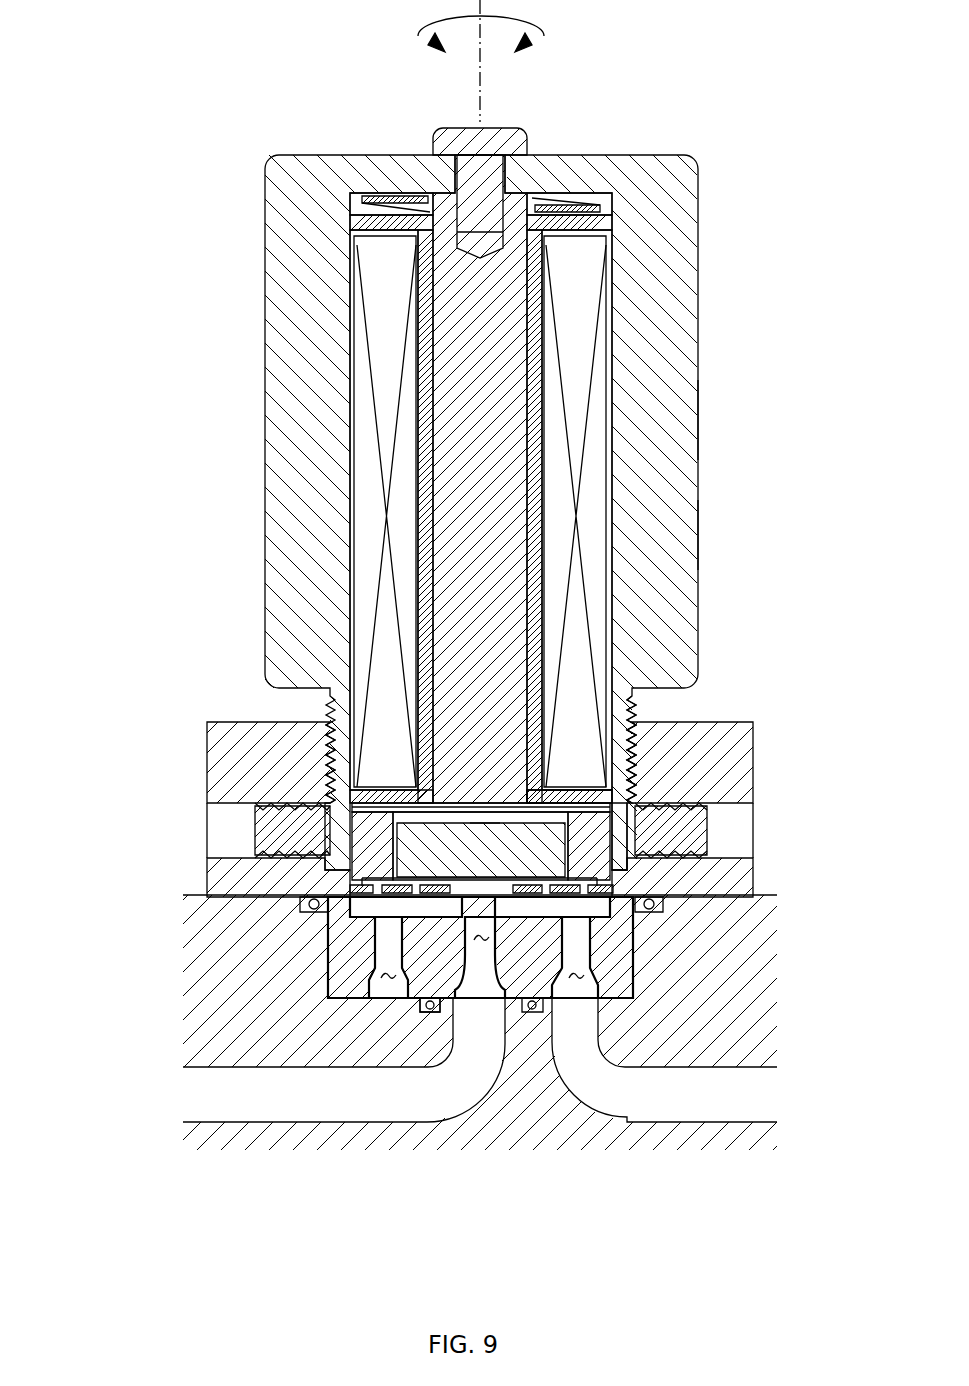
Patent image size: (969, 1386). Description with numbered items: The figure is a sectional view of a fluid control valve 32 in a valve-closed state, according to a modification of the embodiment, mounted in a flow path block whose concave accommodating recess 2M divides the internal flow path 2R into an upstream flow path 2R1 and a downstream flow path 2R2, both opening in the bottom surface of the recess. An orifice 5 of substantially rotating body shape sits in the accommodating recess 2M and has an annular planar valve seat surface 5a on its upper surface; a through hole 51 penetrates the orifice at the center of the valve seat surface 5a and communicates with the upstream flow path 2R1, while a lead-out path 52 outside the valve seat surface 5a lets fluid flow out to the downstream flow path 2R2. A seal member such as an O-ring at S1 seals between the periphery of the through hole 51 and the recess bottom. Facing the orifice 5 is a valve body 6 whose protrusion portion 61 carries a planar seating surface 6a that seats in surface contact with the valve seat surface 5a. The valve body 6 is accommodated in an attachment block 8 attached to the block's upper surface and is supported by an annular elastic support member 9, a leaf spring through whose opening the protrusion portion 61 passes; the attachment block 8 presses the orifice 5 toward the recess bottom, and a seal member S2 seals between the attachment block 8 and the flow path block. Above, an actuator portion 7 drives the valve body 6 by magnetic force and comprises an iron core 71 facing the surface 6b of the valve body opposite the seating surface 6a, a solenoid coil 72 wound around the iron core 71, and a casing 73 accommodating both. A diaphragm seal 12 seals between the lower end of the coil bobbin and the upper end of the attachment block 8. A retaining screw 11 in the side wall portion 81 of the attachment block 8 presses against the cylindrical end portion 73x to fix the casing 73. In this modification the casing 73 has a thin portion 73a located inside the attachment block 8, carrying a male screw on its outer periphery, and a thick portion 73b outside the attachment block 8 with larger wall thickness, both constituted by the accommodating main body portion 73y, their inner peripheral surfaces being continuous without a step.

The fluid control valve 32 is at (283, 118).
The actuator portion 7 is at (125, 300).
The iron core 71 is at (450, 297).
The solenoid coil 72 is at (370, 383).
The casing 73 is at (265, 443).
The accommodating main body portion 73y is at (697, 421).
The thick portion 73b is at (697, 534).
The thin portion 73a is at (635, 718).
The cylindrical end portion 73x is at (640, 880).
The surface of the valve body opposite to the seating surface 6b is at (483, 823).
The attachment block 8 is at (232, 722).
The diaphragm seal 12 is at (395, 810).
The valve body 6 is at (397, 827).
The retaining screw 11 is at (255, 830).
The support member 9 is at (352, 880).
The accommodating recess 2M is at (327, 930).
The protrusion portion 61 is at (440, 912).
The seating surface 6a is at (370, 985).
The lead-out path 52 is at (423, 1008).
The valve seat surface 5a is at (613, 786).
The side wall portion 81 is at (755, 790).
The seal member S2 is at (663, 905).
The orifice 5 is at (633, 955).
The through hole 51 is at (490, 930).
The seal S1 is at (428, 1012).
The upstream flow path 2R1 is at (450, 1093).
The downstream flow path 2R2 is at (635, 1093).
The internal flow path 2R is at (605, 1232).